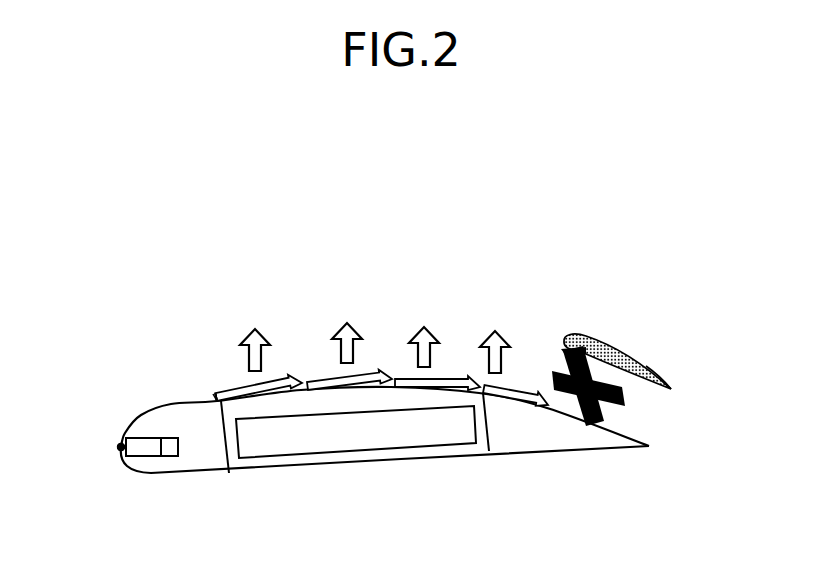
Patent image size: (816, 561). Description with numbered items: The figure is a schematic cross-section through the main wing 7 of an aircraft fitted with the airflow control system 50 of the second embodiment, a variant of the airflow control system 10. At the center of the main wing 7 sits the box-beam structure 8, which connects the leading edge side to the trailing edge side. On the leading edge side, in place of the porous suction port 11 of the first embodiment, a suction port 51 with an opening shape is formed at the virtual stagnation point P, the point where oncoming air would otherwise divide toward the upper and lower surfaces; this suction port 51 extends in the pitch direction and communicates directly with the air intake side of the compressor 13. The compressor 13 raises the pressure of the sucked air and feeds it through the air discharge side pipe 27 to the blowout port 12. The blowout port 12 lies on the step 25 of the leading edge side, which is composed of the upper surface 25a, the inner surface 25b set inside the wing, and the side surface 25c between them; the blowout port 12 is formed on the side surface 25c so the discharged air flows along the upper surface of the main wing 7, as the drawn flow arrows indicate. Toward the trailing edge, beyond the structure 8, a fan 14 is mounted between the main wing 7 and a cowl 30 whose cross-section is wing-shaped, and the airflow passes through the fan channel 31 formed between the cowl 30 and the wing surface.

The main wing 7 is at (545, 224).
The structure 8 is at (333, 463).
The airflow control system 10 is at (688, 388).
The suction port 11 is at (104, 460).
The blowout port 12 is at (215, 396).
The compressor 13 is at (168, 445).
The fan 14 is at (608, 426).
The step 25 is at (184, 378).
The upper surface 25a is at (172, 392).
The inner surface 25b is at (241, 392).
The side surface 25c is at (224, 403).
The air discharge side pipe 27 is at (205, 404).
The cowl 30 is at (611, 342).
The fan channel 31 is at (643, 408).
The airflow control system 50 is at (657, 352).
The suction port 51 is at (144, 452).
The virtual stagnation point P is at (118, 445).